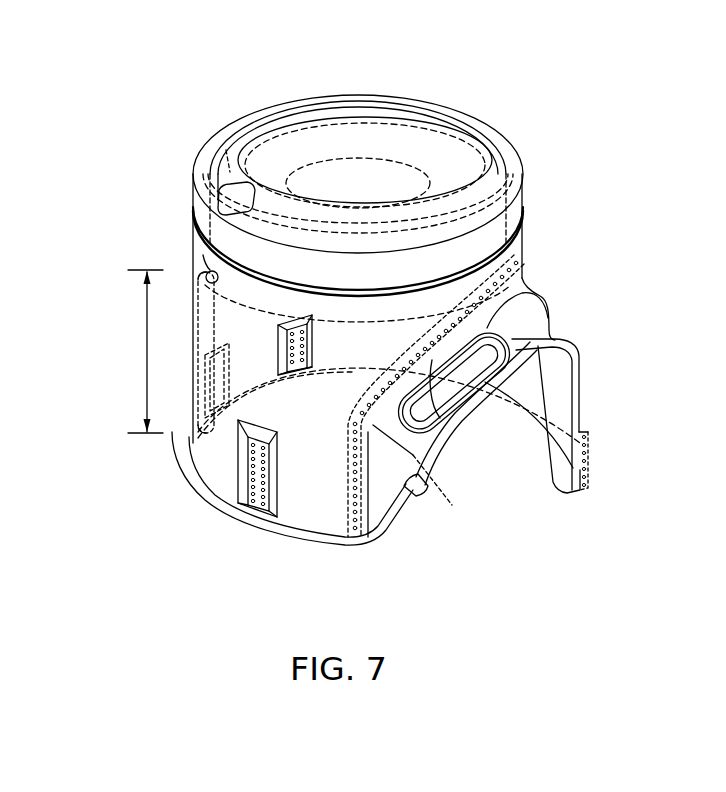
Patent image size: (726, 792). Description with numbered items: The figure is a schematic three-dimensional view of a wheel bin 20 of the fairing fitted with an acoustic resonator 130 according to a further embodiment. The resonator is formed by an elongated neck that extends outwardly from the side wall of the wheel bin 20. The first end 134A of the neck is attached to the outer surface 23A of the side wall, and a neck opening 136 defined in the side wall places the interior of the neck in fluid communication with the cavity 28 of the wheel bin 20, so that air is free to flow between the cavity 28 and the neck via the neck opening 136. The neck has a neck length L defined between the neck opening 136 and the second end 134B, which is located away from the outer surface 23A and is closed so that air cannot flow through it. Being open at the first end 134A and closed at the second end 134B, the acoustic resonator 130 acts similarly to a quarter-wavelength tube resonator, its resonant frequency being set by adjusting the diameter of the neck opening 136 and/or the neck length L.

The wheel bin 20 is at (518, 115).
The neck opening 136 is at (190, 263).
The first end of the neck 134A is at (187, 267).
The second end of the neck 134B is at (180, 438).
The acoustic resonator 130 is at (187, 370).
The neck length L is at (147, 345).
The outer surface of the side wall 23A is at (373, 425).
The cavity 28 is at (354, 443).